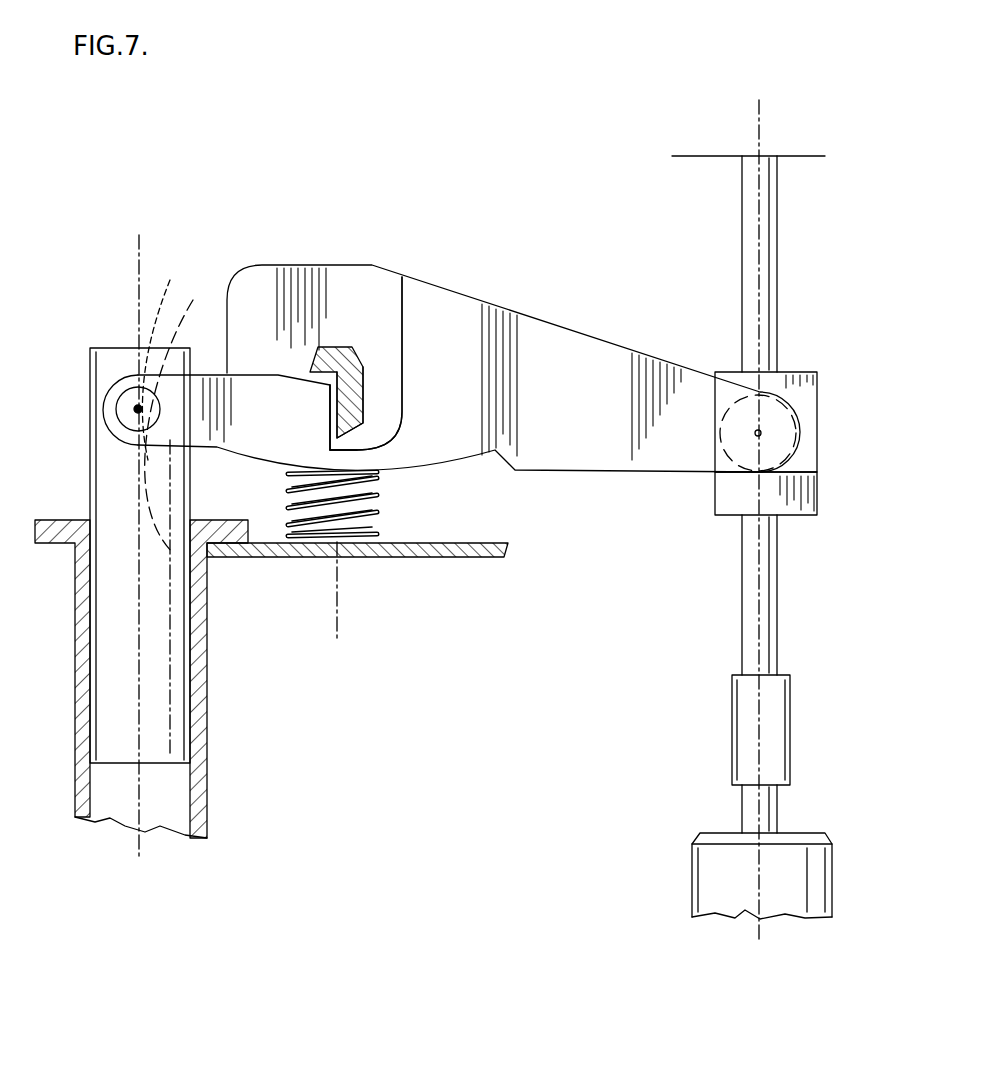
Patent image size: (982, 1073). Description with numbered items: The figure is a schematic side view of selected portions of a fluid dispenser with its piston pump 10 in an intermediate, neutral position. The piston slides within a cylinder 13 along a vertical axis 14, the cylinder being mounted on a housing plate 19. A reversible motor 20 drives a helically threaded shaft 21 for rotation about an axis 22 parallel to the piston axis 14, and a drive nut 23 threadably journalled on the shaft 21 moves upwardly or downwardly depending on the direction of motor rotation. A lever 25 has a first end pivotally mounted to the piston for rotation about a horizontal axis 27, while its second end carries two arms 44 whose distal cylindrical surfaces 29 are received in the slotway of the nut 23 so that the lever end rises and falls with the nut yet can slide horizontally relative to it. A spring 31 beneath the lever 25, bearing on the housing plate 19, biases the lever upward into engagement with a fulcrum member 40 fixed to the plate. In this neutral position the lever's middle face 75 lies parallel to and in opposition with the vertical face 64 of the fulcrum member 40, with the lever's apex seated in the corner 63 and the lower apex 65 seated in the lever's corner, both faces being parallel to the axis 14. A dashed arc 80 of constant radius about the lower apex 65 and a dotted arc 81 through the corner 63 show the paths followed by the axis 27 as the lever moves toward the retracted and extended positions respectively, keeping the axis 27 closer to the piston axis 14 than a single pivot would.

The piston pump 10 is at (102, 352).
The cylinder 13 is at (204, 645).
The axis 14 is at (139, 235).
The housing plate 19 is at (400, 555).
The reversible motor 20 is at (700, 870).
The helically threaded shaft 21 is at (740, 230).
The axis 22 is at (755, 140).
The drive nut 23 is at (720, 497).
The lever 25 is at (473, 277).
The horizontal axis 27 is at (134, 410).
The cylindrical surfaces 29 is at (796, 424).
The spring 31 is at (380, 497).
The fulcrum member 40 is at (348, 328).
The arms 44 is at (690, 437).
The corner 63 is at (360, 365).
The vertical face 64 is at (363, 418).
The lower apex 65 is at (330, 450).
The middle face 75 is at (330, 420).
The arc 80 is at (156, 537).
The arc 81 is at (136, 355).